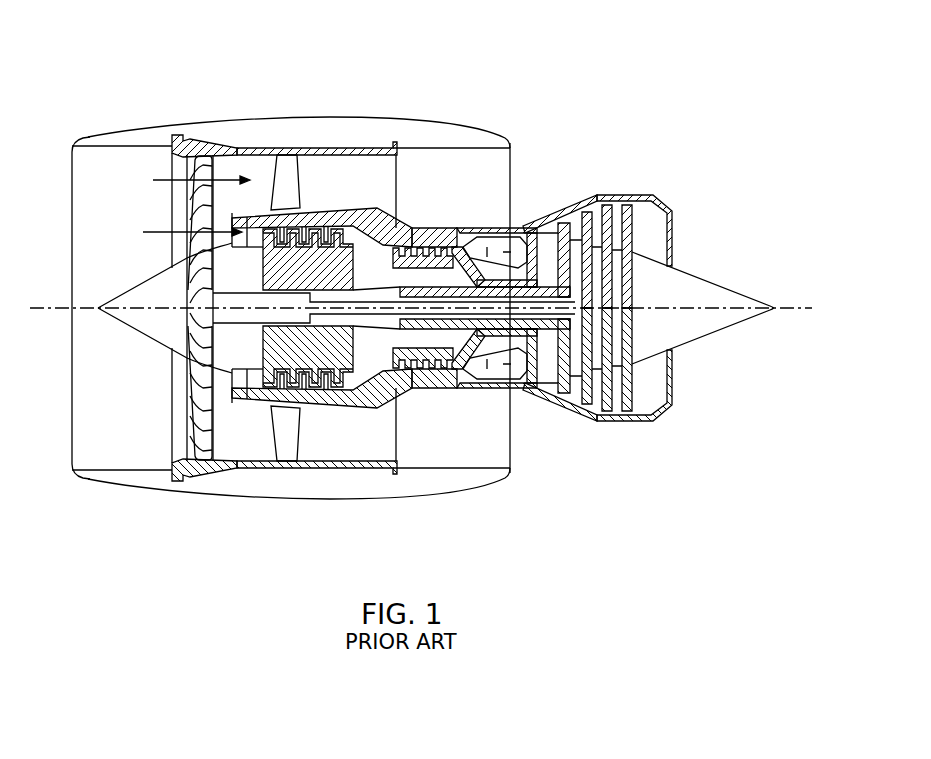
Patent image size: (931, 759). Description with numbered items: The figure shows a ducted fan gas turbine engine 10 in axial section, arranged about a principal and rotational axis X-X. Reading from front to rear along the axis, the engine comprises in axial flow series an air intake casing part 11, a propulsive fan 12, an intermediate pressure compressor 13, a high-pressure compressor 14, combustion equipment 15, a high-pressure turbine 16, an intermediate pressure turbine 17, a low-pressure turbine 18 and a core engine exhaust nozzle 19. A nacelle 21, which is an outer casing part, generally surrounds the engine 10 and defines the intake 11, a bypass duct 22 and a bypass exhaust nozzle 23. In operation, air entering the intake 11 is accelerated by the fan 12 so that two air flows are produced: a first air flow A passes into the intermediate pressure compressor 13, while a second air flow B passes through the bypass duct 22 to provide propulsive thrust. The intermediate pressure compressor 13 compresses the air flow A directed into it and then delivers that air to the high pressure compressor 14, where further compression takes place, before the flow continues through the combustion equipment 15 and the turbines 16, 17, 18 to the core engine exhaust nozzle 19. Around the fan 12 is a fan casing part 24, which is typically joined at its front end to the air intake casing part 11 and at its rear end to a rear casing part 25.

The ducted fan gas turbine engine 10 is at (117, 90).
The air intake casing part 11 is at (118, 147).
The propulsive fan 12 is at (200, 428).
The intermediate pressure compressor 13 is at (323, 388).
The high-pressure compressor 14 is at (428, 252).
The combustion equipment 15 is at (477, 383).
The high-pressure turbine 16 is at (525, 384).
The intermediate pressure turbine 17 is at (557, 221).
The low-pressure turbine 18 is at (567, 412).
The core engine exhaust nozzle 19 is at (653, 197).
The nacelle 21 is at (325, 132).
The bypass duct 22 is at (469, 186).
The bypass exhaust nozzle 23 is at (510, 142).
The fan casing part 24 is at (228, 472).
The rear casing part 25 is at (307, 470).